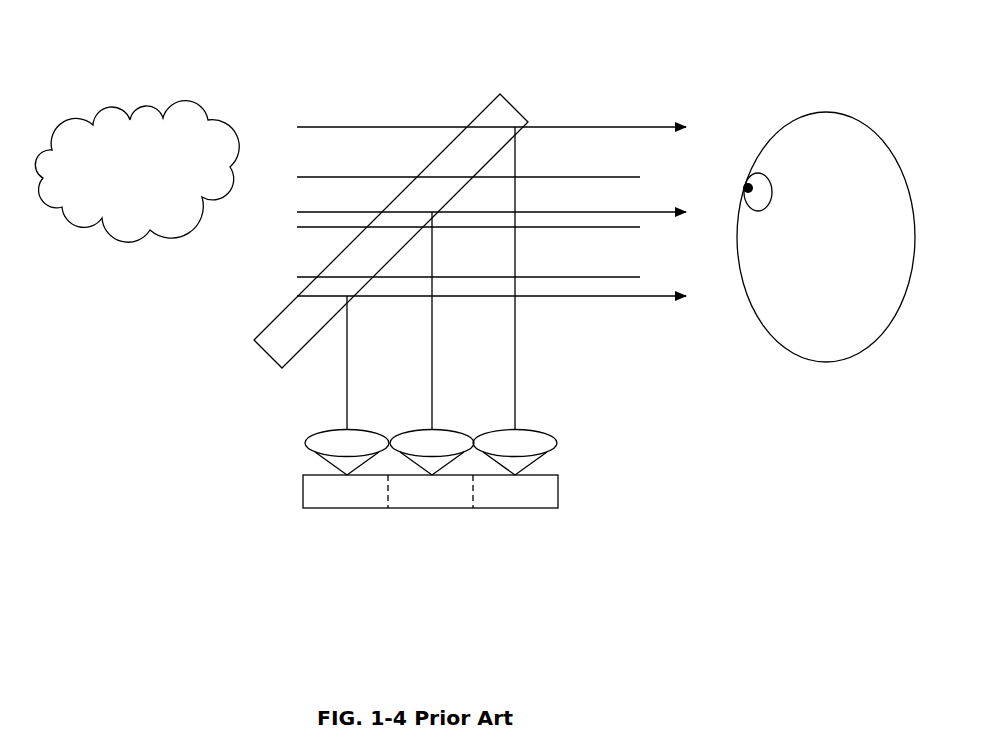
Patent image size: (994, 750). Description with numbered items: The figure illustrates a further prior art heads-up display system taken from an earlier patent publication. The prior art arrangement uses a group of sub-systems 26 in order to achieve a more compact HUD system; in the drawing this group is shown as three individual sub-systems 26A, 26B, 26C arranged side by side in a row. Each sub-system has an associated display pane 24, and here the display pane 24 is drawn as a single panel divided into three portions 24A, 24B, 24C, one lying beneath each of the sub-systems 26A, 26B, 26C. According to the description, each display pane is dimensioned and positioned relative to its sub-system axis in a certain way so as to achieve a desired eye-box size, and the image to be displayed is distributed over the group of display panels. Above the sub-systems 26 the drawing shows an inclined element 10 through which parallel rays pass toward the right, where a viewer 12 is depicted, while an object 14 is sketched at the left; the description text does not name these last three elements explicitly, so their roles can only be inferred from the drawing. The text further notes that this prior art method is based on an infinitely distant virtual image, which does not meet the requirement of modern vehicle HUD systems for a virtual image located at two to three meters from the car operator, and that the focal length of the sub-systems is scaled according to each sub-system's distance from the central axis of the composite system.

The beam splitter / mirror 10 is at (493, 116).
The user's head / eye 12 is at (822, 126).
The scene / object 14 is at (108, 130).
The display pane 24 is at (485, 518).
The detector element 24A is at (340, 499).
The detector element 24B is at (428, 499).
The detector element 24C is at (517, 499).
The group of sub-systems 26 is at (472, 432).
The lens 26A is at (322, 443).
The lens 26B is at (415, 443).
The lens 26C is at (502, 443).